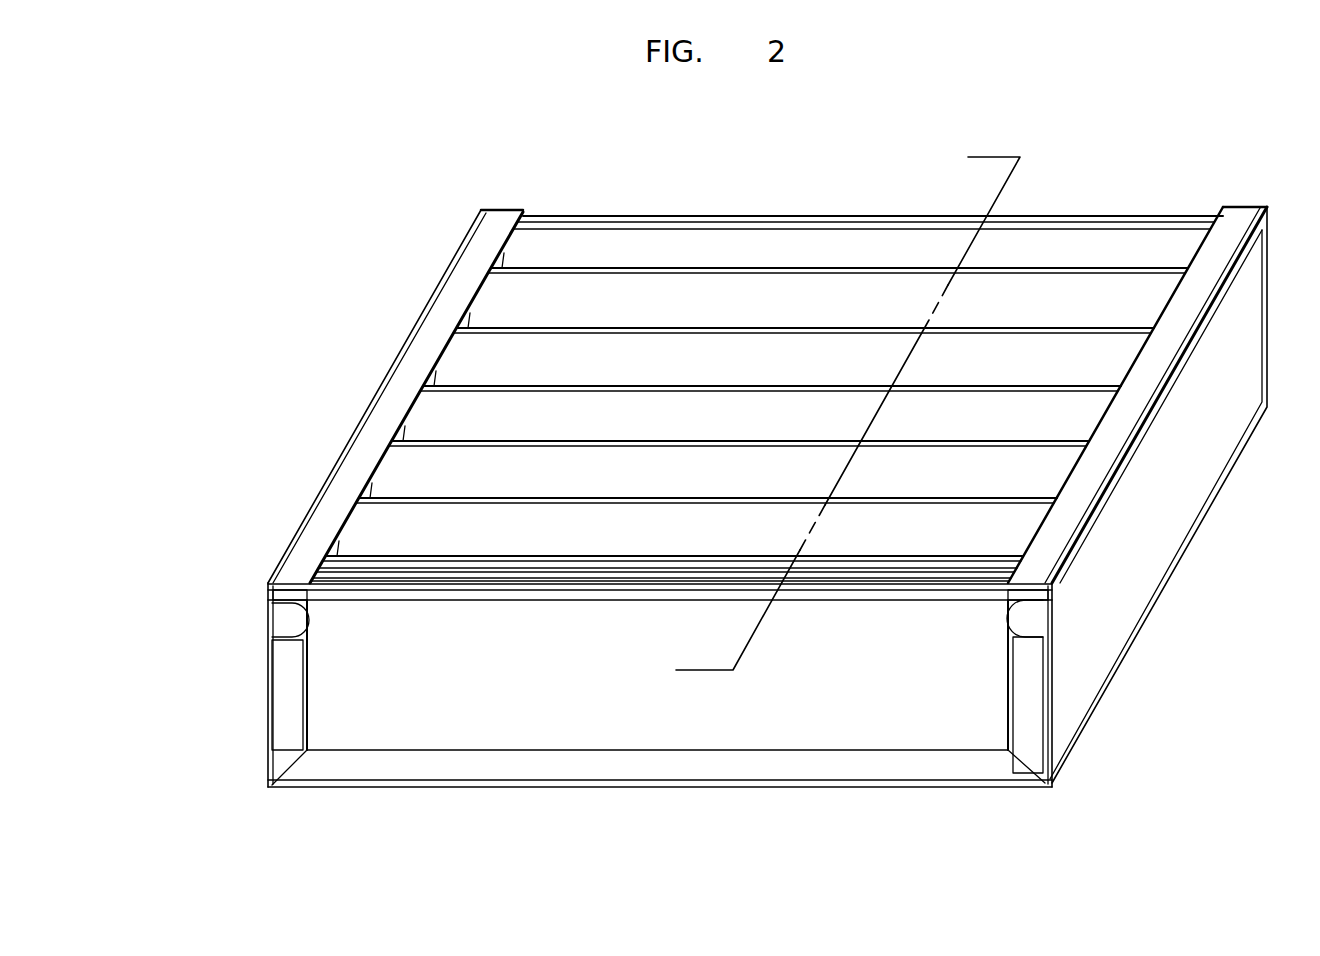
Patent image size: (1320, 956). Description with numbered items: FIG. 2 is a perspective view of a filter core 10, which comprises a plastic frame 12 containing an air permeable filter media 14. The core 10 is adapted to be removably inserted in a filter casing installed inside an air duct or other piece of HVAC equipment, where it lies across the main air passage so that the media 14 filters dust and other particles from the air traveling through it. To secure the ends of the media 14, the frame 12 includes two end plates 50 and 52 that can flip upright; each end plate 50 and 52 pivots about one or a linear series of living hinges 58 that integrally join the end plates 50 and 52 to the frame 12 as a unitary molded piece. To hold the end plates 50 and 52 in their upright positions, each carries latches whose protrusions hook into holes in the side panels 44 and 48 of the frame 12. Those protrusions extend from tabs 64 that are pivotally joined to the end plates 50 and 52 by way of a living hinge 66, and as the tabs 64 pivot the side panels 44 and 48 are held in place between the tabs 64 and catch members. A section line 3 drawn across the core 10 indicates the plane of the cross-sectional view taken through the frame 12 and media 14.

The section line 3- 3 is at (816, 417).
The filter core 10 is at (727, 469).
The plastic frame 12 is at (470, 787).
The air permeable filter media 14 is at (557, 270).
The side panel 44 is at (820, 720).
The side panel 48 is at (1104, 208).
The end plate 50 is at (266, 692).
The end plate 52 is at (1173, 503).
The living hinge 58 is at (1118, 667).
The tab 64 is at (310, 622).
The living hinge 66 is at (266, 620).